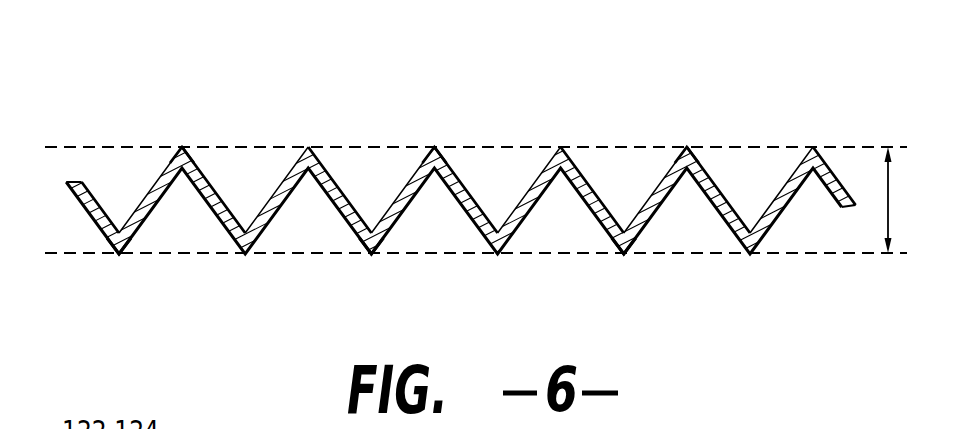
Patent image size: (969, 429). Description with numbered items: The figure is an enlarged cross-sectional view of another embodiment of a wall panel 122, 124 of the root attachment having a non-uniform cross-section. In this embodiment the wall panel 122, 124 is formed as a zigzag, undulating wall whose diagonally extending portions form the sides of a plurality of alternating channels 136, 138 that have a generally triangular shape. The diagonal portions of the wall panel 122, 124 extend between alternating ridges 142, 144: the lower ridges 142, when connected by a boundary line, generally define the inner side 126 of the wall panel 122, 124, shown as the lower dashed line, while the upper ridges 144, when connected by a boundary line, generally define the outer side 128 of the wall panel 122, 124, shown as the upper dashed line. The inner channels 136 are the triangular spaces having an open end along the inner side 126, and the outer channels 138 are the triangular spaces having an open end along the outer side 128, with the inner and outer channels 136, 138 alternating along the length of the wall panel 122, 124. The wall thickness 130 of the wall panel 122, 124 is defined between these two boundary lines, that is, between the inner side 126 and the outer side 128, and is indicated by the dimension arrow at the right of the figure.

The wall panel 122 is at (450, 214).
The wall panel 124 is at (141, 90).
The inner side 126 is at (293, 253).
The outer side 128 is at (267, 148).
The wall thickness 130 is at (889, 204).
The inner channel 136 is at (185, 226).
The outer channel 138 is at (369, 168).
The ridge 142 is at (120, 243).
The ridge 144 is at (185, 151).